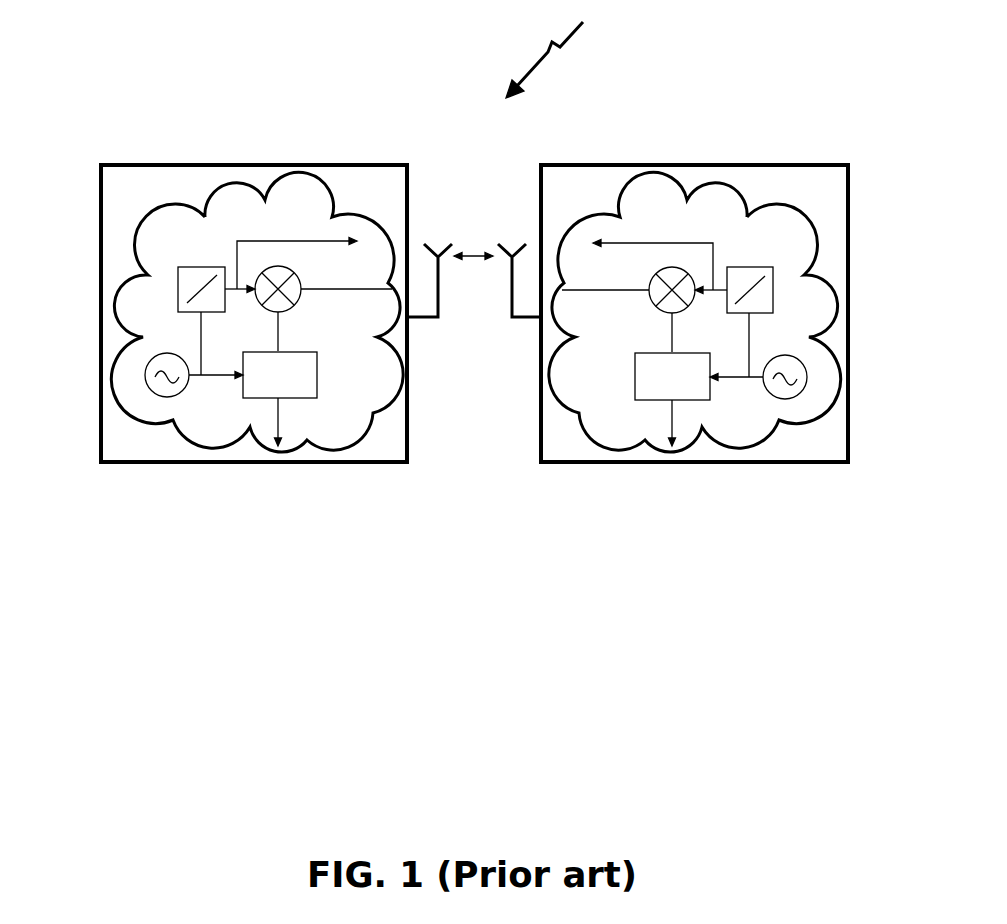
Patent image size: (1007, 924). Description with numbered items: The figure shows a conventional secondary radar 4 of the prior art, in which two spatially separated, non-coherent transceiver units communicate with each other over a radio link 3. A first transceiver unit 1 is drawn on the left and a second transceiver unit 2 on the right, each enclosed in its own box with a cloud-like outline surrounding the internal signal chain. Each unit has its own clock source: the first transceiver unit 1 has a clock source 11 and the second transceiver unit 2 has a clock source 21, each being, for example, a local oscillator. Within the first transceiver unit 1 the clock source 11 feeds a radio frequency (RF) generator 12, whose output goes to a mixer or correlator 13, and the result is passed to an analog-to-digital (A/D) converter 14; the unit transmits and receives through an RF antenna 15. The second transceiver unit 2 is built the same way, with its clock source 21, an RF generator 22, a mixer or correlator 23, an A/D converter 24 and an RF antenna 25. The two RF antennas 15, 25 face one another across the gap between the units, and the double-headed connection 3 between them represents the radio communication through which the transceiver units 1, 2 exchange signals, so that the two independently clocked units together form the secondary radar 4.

The first transceiver unit 1 is at (392, 462).
The second transceiver unit 2 is at (578, 463).
The wireless link 3 is at (477, 256).
The radar system 4 is at (550, 53).
The clock source of the first transceiver unit 11 is at (160, 388).
The radio frequency (RF) generator of the first transceiver unit 12 is at (190, 288).
The mixer of the first transceiver unit 13 is at (277, 280).
The analog-to-digital (A/D) converter of the first transceiver unit 14 is at (273, 385).
The RF antenna of the first transceiver unit 15 is at (436, 245).
The clock source of the second transceiver unit 21 is at (787, 392).
The radio frequency (RF) generator of the second transceiver unit 22 is at (752, 290).
The mixer of the second transceiver unit 23 is at (673, 283).
The analog-to-digital (A/D) converter of the second transceiver unit 24 is at (683, 387).
The RF antenna of the second transceiver unit 25 is at (507, 247).